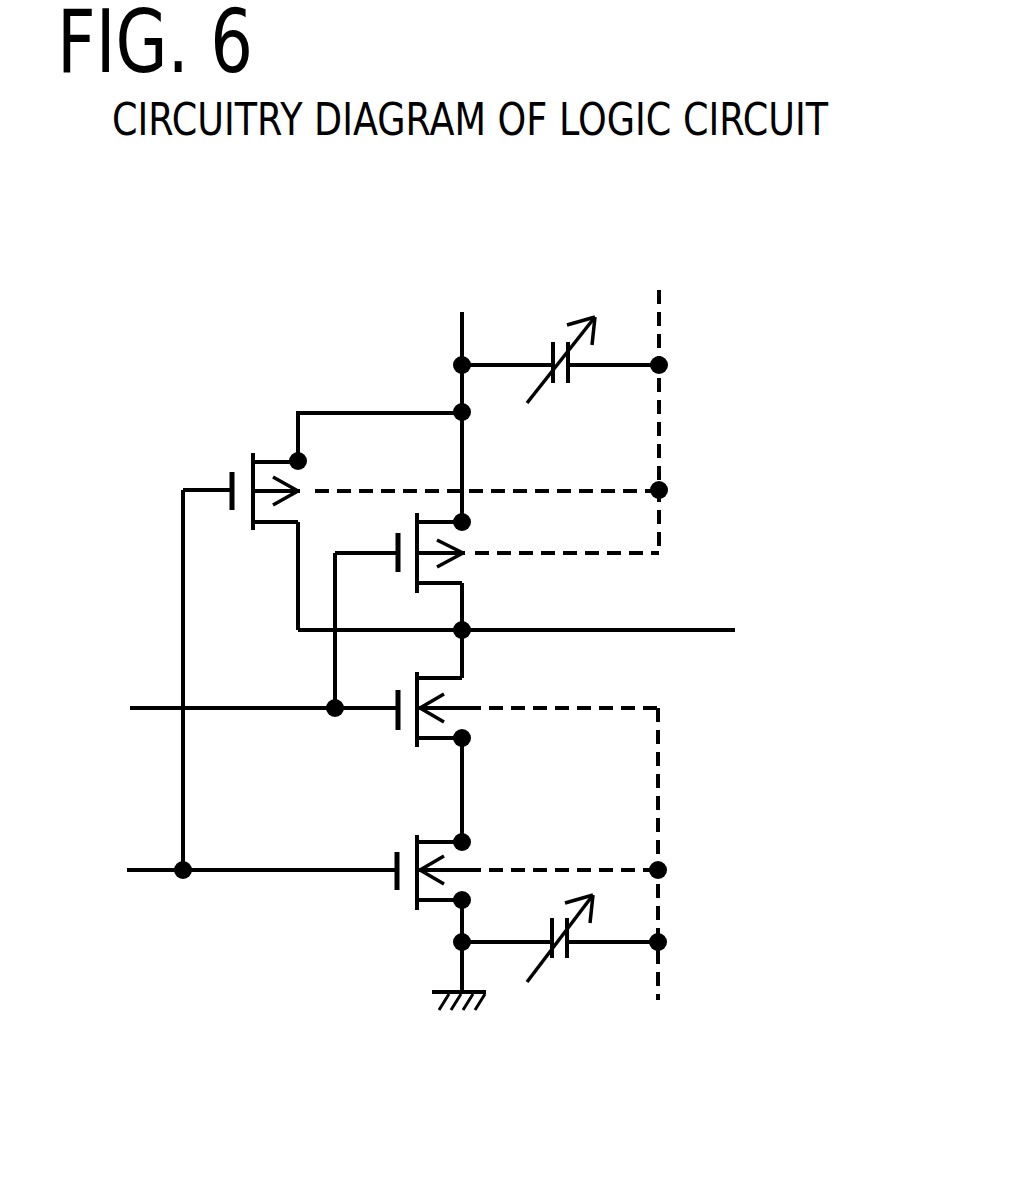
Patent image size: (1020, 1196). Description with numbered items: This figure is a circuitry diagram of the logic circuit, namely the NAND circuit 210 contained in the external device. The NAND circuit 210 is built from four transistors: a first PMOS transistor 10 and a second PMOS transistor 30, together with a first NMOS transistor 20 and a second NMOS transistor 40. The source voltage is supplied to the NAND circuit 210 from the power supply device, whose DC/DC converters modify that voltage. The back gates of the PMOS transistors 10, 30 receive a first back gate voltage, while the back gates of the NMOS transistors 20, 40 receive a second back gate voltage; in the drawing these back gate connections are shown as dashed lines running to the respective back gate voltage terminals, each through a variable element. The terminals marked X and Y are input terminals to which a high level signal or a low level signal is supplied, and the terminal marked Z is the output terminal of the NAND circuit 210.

The NAND circuit 210 is at (776, 231).
The PMOS transistor FET10 10 is at (413, 467).
The NMOS transistor FET20 20 is at (392, 884).
The PMOS transistor FET30 30 is at (497, 568).
The NMOS transistor FET40 40 is at (465, 722).